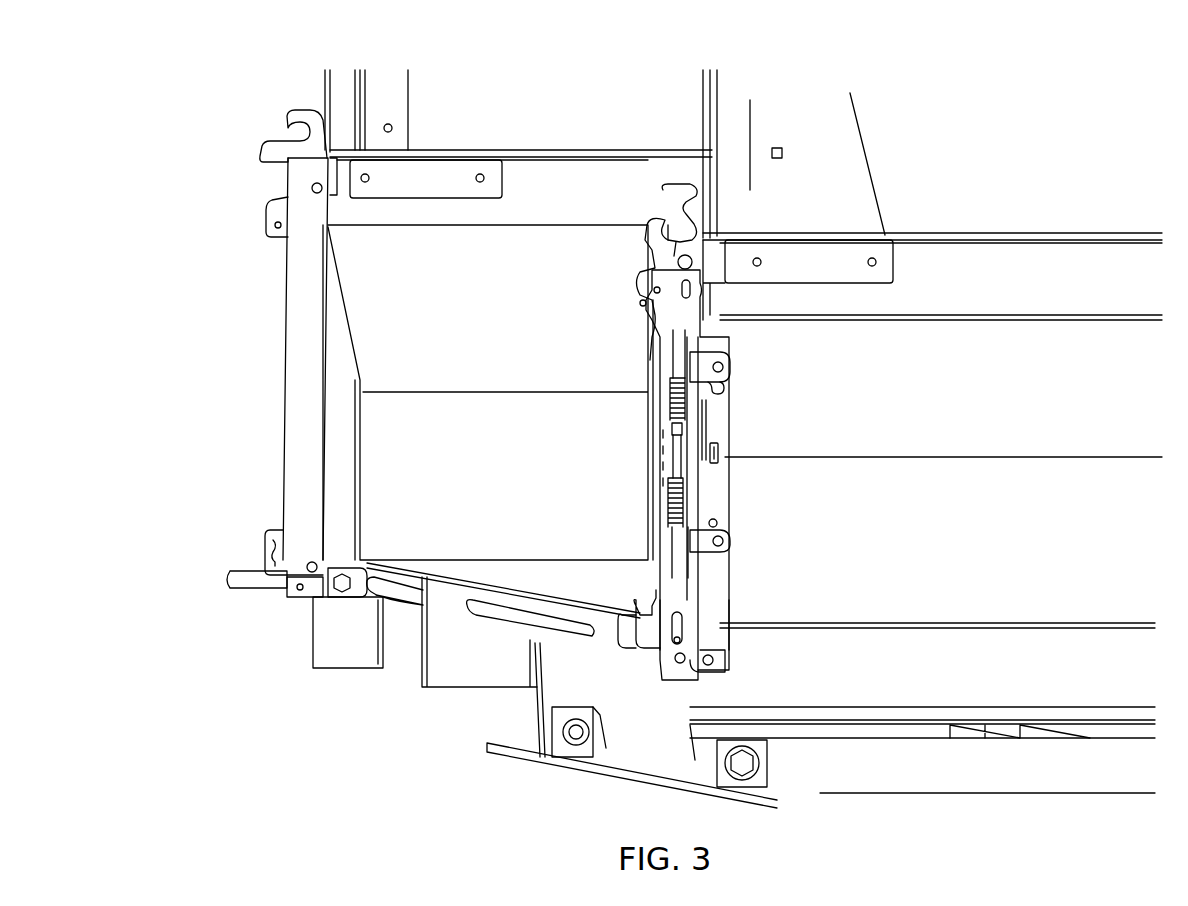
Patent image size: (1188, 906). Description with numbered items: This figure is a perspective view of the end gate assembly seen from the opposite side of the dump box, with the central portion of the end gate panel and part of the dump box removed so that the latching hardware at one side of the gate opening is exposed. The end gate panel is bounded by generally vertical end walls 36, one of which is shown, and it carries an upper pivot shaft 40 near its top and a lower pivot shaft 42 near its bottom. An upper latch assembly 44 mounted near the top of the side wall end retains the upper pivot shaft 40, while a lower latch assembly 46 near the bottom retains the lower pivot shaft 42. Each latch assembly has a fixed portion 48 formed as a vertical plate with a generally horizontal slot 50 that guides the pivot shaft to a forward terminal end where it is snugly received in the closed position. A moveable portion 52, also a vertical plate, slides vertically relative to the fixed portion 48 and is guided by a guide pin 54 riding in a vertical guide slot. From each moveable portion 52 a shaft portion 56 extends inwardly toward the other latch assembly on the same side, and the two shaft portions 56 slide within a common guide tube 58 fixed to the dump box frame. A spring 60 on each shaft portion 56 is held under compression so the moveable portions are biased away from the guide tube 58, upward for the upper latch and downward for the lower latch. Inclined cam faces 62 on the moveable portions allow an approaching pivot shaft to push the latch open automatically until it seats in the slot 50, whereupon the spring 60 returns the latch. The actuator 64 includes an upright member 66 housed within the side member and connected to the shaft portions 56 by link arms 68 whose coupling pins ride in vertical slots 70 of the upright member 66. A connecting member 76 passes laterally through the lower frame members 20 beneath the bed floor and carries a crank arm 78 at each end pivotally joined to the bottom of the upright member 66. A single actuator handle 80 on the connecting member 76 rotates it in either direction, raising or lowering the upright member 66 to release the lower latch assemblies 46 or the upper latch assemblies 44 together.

The lower frame members 20 is at (440, 680).
The end walls 36 is at (298, 403).
The upper pivot shafts 40 is at (770, 235).
The lower pivot shafts 42 is at (690, 642).
The upper latch assemblies 44 is at (600, 255).
The lower latch assemblies 46 is at (725, 645).
The fixed portion 48 is at (640, 222).
The slot 50 is at (646, 268).
The moveable portion 52 is at (664, 318).
The guide pin 54 is at (672, 292).
The shaft portion 56 is at (690, 350).
The guide tube 58 is at (700, 442).
The spring 60 is at (704, 410).
The cam faces 62 is at (662, 218).
The actuator 64 is at (485, 620).
The upright member 66 is at (722, 482).
The link arms 68 is at (730, 365).
The vertical slots 70 is at (730, 382).
The connecting member 76 is at (528, 612).
The crank arm 78 is at (358, 592).
The actuator handle 80 is at (268, 582).